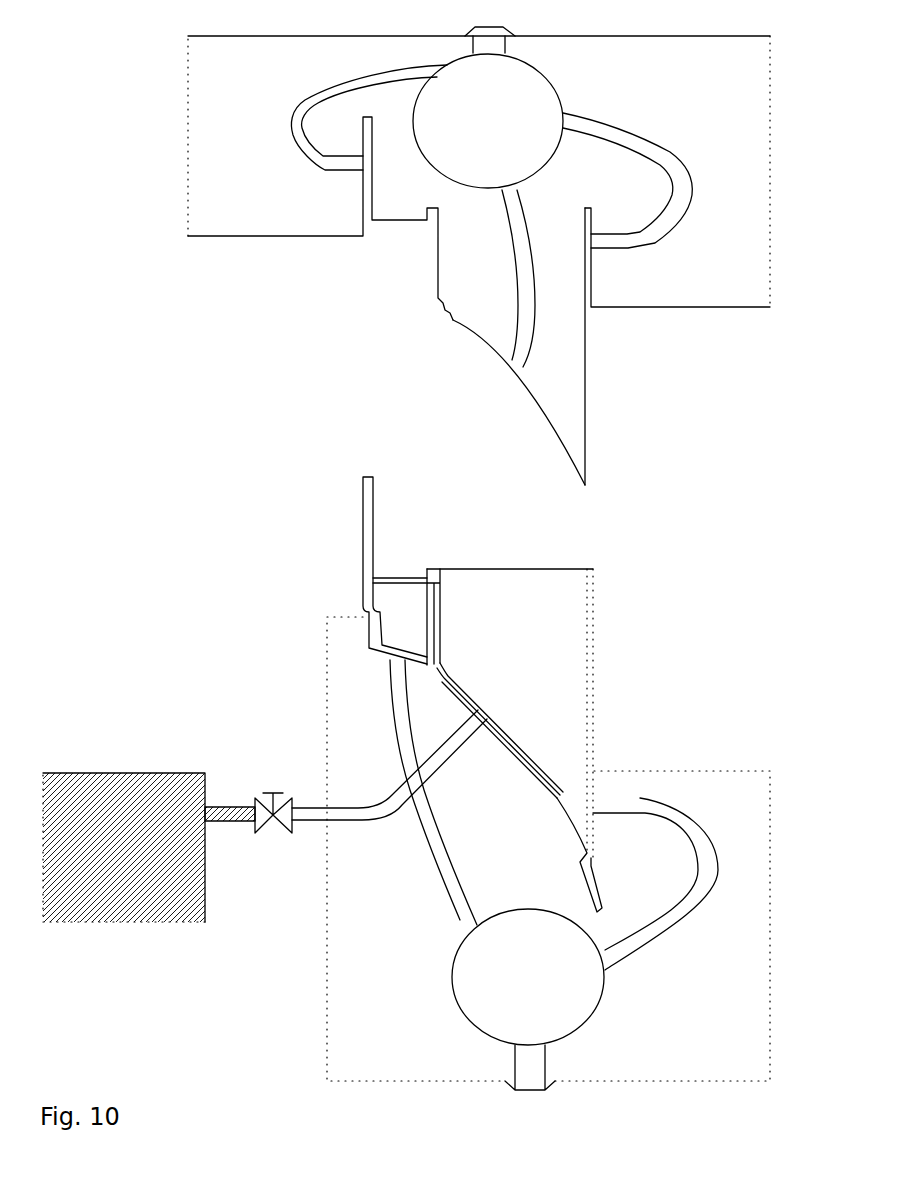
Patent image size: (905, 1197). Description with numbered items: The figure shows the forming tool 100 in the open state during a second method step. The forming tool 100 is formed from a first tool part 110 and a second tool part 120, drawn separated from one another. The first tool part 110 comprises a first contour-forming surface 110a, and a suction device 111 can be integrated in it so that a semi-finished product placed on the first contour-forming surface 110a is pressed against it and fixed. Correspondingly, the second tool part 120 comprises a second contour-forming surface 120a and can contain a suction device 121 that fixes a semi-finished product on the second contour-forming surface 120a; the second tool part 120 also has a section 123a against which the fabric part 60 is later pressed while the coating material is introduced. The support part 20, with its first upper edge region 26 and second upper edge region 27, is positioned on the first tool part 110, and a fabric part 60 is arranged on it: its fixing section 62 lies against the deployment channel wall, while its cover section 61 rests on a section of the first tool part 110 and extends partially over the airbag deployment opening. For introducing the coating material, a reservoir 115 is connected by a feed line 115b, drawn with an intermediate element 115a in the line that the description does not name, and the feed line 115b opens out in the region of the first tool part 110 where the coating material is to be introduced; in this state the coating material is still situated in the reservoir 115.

The forming tool 100 is at (146, 190).
The second tool part 120 is at (738, 293).
The second contour-forming surface 120a is at (473, 331).
The corresponding section of the second tool part 123a is at (553, 415).
The suction device 121 is at (575, 92).
The support part 20 is at (606, 590).
The second upper edge region 27 is at (593, 630).
The first upper edge region 26 is at (427, 605).
The fixing section 62 is at (440, 612).
The fabric part 60 is at (470, 685).
The cover section 61 is at (497, 713).
The first tool part 110 is at (736, 1082).
The first contour-forming surface 110a is at (573, 812).
The suction device 111 is at (452, 988).
The reservoir 115 is at (100, 748).
The valve 115a is at (272, 786).
The feed line 115b is at (383, 803).